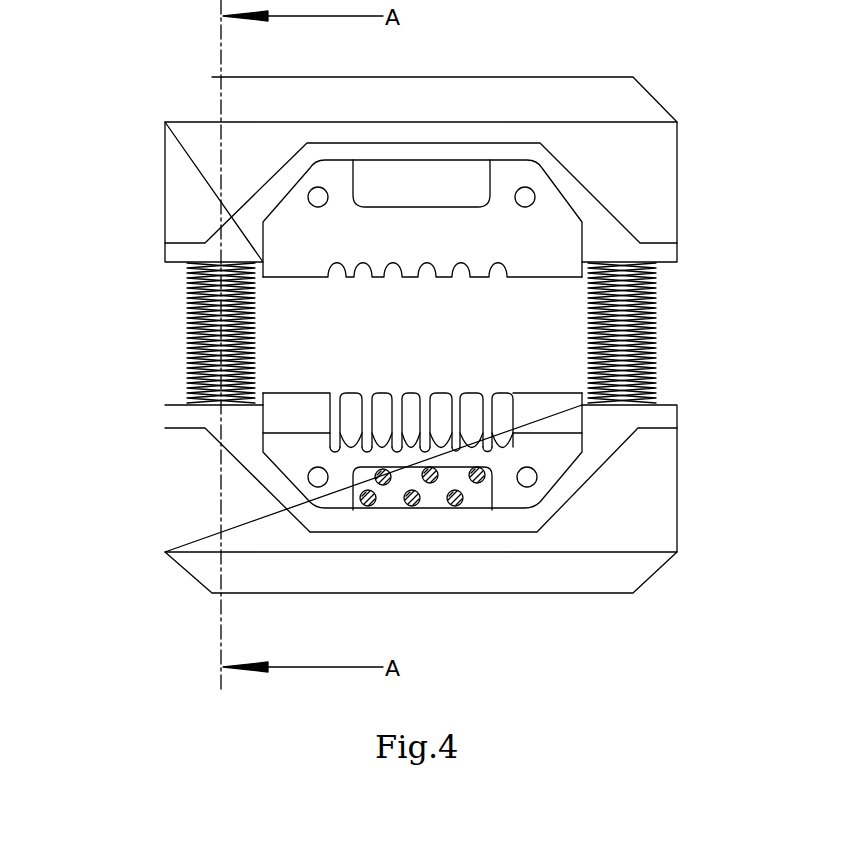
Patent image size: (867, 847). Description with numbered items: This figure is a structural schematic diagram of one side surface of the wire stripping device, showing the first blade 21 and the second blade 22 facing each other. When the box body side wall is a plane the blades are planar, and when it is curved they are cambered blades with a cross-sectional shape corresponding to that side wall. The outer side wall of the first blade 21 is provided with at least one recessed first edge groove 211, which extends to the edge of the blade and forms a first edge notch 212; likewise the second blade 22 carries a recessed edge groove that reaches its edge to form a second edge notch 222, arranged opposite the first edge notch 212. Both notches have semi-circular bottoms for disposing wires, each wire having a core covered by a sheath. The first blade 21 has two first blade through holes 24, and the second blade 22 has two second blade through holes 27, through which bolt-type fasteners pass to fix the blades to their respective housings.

The first blade 21 is at (295, 452).
The second blade 22 is at (282, 222).
The first blade through hole 24 is at (530, 480).
The second blade through hole 27 is at (530, 195).
The first edge groove 211 is at (455, 436).
The first edge notch 212 is at (466, 392).
The second edge notch 222 is at (465, 279).